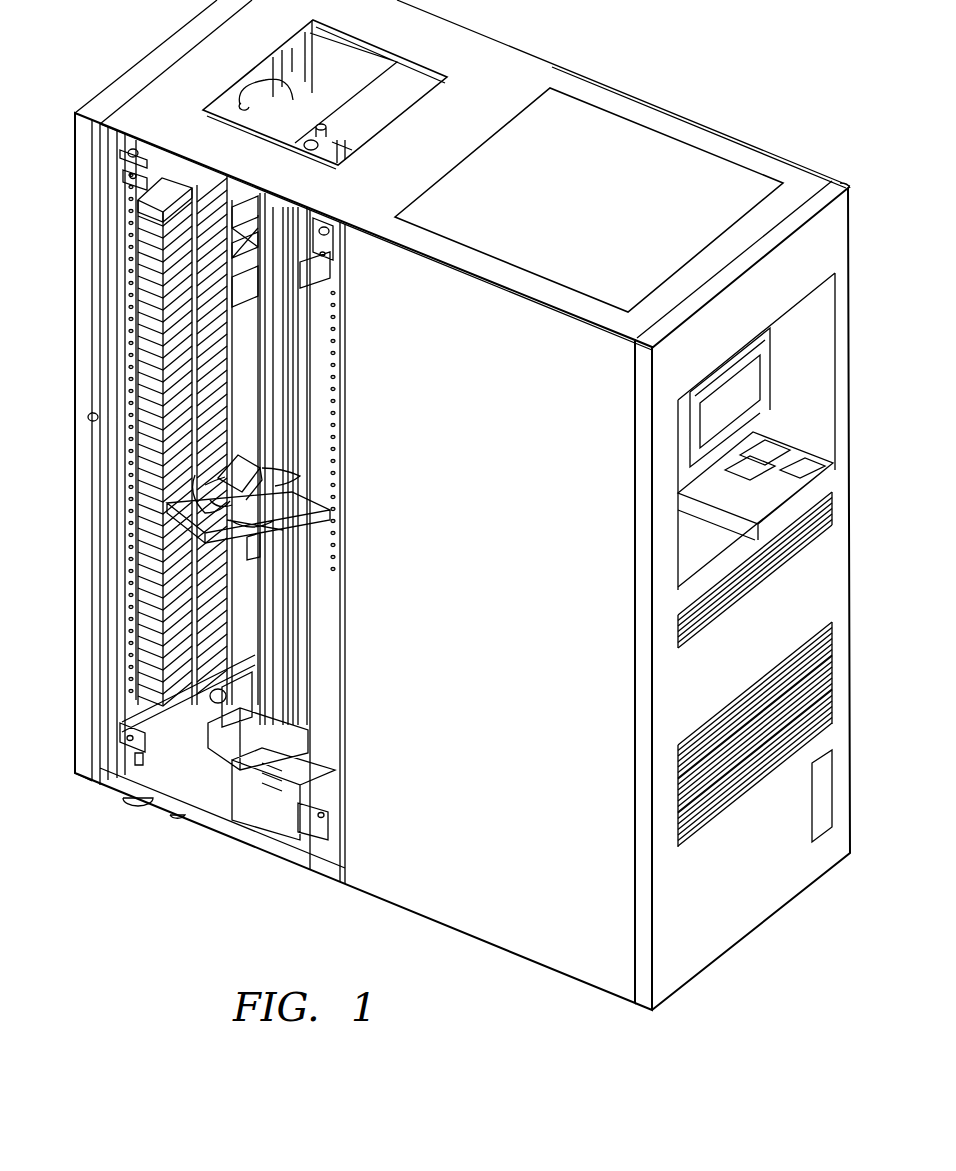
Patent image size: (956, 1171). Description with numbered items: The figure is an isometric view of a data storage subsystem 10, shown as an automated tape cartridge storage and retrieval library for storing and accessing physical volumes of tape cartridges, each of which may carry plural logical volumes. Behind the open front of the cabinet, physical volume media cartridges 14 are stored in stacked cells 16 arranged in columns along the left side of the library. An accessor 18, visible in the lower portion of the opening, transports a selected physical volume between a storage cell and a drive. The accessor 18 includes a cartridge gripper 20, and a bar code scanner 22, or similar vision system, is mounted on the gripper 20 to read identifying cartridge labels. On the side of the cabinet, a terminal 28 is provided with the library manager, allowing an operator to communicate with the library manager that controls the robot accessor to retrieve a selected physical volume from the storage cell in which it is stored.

The data storage subsystem 10 is at (505, 62).
The physical volume media cartridges 14 is at (161, 252).
The cells 16 is at (85, 415).
The accessor 18 is at (238, 735).
The cartridge gripper 20 is at (306, 558).
The bar code scanner 22 is at (255, 472).
The terminal 28 is at (807, 472).